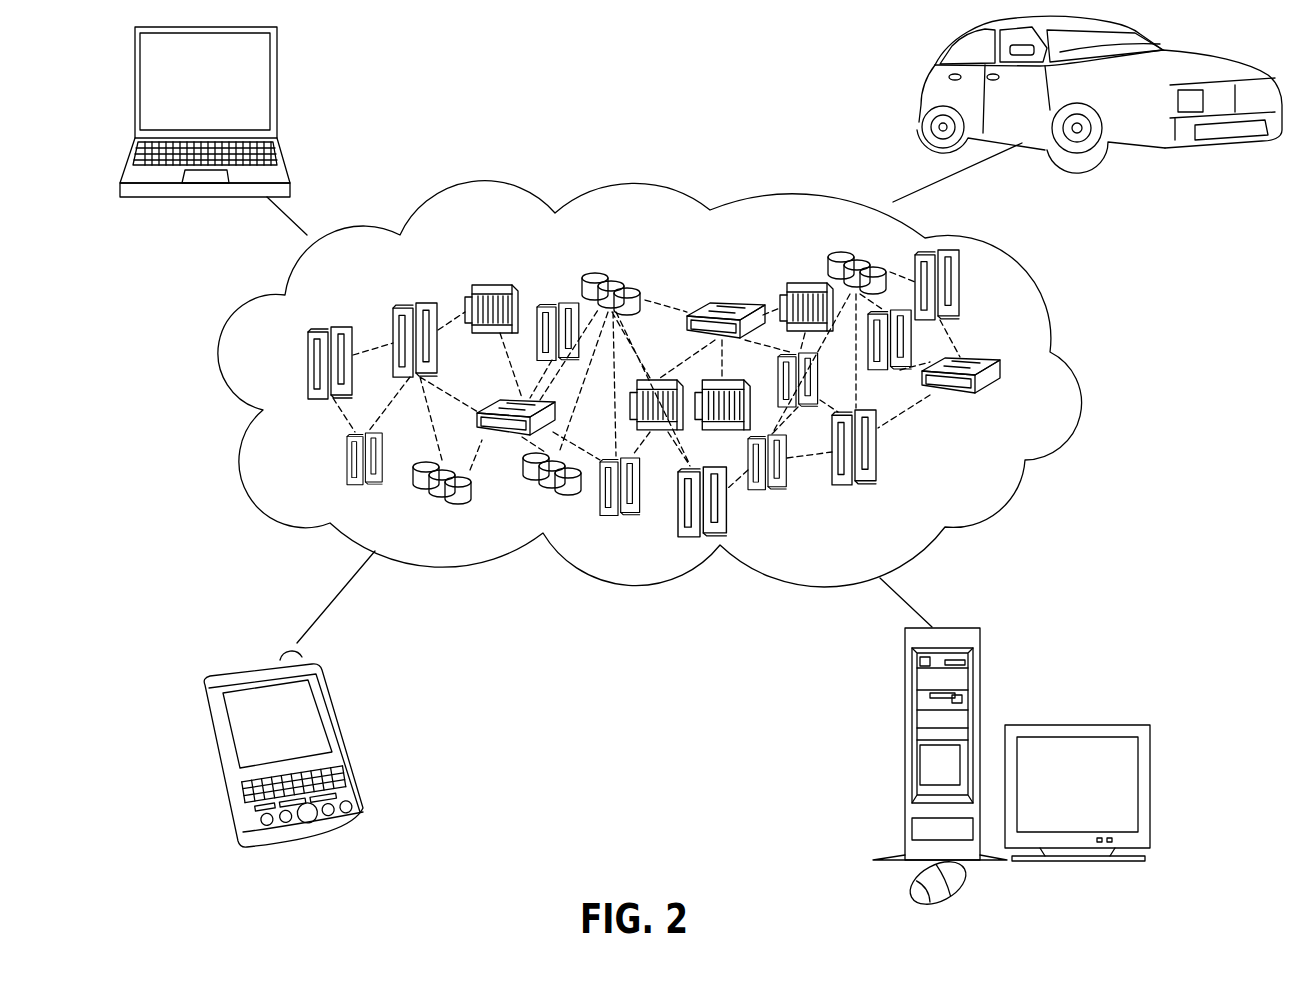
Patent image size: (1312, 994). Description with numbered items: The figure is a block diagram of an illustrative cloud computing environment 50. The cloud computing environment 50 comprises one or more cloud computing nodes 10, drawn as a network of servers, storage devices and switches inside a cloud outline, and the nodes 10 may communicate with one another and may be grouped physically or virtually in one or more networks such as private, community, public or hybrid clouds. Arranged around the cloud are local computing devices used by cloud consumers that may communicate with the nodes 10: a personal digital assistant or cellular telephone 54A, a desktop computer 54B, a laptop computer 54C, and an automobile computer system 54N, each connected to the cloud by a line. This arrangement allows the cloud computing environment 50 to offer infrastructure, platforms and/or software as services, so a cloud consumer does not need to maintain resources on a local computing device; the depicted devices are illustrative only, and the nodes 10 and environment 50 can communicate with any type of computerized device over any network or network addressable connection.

The cloud computing nodes 10 is at (984, 482).
The cloud computing environment 50 is at (1073, 373).
The personal digital assistant (PDA) or cellular telephone 54A is at (330, 705).
The desktop computer 54B is at (905, 690).
The laptop computer 54C is at (275, 67).
The automobile computer system 54N is at (915, 85).